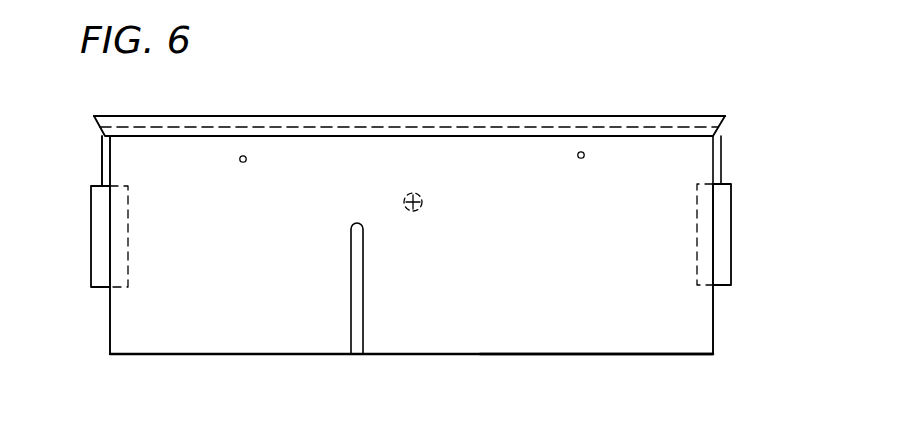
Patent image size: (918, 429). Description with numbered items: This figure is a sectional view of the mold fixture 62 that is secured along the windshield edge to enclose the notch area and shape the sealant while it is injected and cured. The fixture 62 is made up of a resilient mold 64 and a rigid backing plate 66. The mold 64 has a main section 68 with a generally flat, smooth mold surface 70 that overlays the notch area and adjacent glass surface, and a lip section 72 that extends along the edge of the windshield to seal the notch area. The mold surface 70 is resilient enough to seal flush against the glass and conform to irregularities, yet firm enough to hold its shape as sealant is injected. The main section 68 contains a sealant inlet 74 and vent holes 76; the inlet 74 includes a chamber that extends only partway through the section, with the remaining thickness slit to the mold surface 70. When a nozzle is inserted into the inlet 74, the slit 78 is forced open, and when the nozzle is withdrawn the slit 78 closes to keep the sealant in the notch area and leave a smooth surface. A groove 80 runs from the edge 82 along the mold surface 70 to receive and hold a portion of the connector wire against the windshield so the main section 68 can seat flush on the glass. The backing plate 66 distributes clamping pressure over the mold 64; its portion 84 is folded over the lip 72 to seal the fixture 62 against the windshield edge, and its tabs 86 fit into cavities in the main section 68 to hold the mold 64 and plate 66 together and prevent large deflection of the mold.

The mold fixture 62 is at (738, 96).
The resilient mold 64 is at (110, 318).
The rigid backing plate 66 is at (102, 152).
The main section 68 is at (714, 297).
The mold surface 70 is at (572, 337).
The lip section 72 is at (631, 125).
The sealant inlet 74 is at (403, 198).
The vent holes 76 is at (242, 155).
The slit 78 is at (418, 193).
The groove 80 is at (363, 275).
The edge 82 is at (172, 356).
The portion of plate 84 is at (175, 115).
The tabs 86 is at (91, 218).